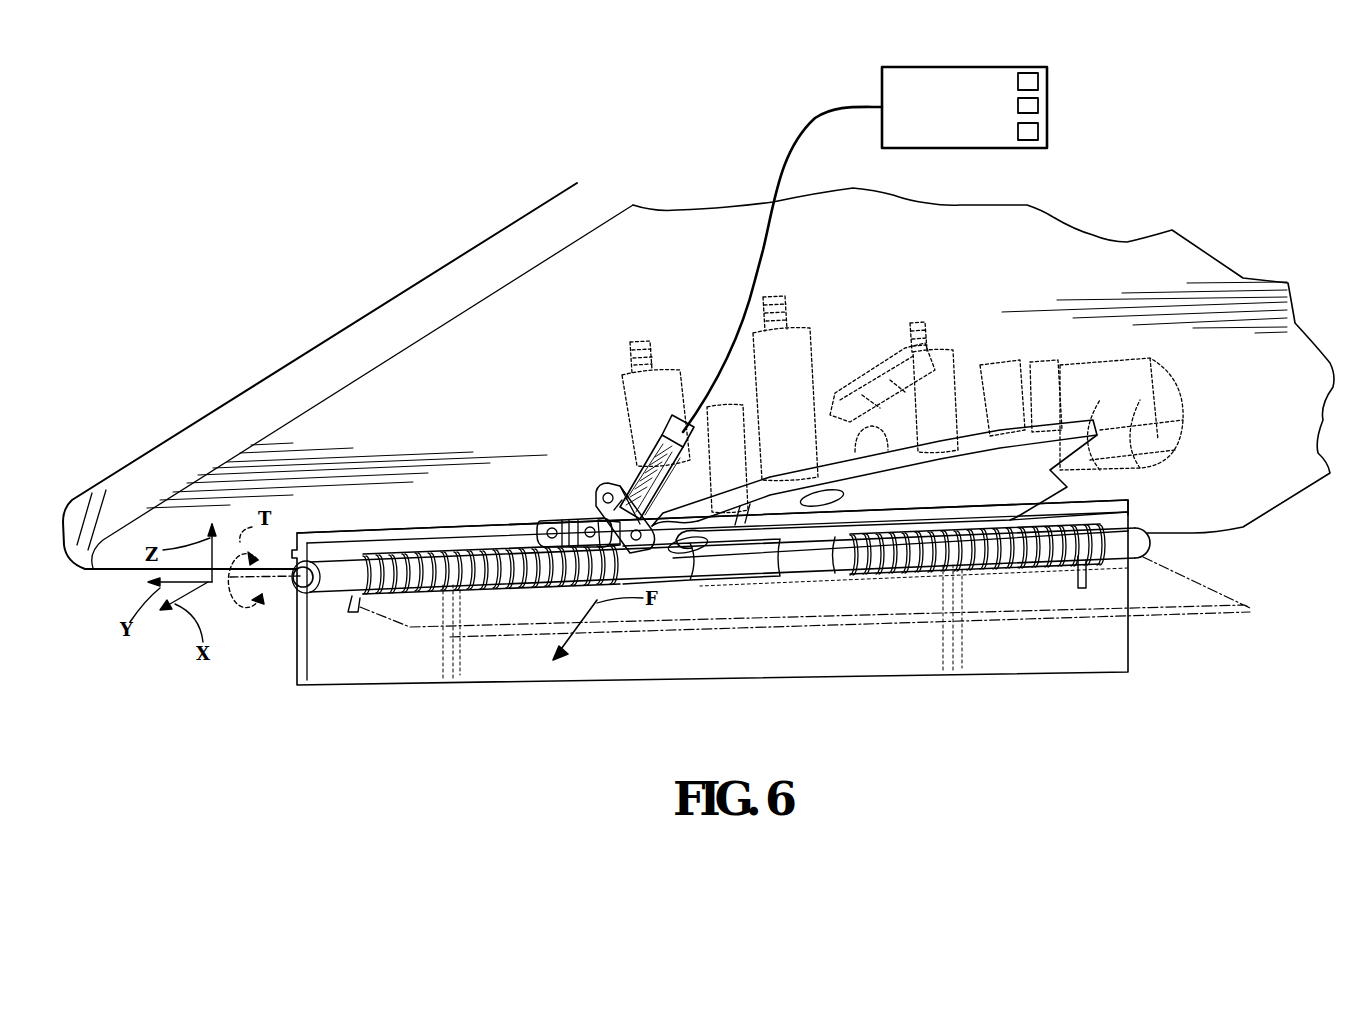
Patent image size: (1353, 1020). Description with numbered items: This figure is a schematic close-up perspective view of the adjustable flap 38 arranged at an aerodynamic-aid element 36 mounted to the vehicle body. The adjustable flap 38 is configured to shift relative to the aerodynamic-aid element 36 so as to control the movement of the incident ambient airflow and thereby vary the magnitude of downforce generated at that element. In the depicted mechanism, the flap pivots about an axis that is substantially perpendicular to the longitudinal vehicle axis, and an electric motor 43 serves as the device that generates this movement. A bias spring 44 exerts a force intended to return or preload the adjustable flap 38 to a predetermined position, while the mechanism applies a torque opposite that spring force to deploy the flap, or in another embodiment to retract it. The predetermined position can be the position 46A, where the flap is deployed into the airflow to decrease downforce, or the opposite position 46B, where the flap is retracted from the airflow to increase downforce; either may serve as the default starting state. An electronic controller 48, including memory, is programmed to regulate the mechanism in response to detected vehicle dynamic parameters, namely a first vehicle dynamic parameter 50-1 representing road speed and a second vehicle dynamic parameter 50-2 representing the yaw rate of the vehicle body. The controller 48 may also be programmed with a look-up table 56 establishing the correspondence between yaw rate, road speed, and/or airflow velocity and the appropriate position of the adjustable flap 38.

The aerodynamic-aid element 36 is at (227, 401).
The adjustable flap 38 is at (347, 657).
The electric motor 43 is at (1028, 354).
The bias spring 44 is at (507, 577).
The deployed position 46A is at (1128, 661).
The retracted position 46B is at (1198, 620).
The electronic controller 48 is at (964, 107).
The first vehicle dynamic parameter 50-1 is at (1040, 82).
The second vehicle dynamic parameter 50-2 is at (1040, 107).
The look-up table 56 is at (1040, 133).